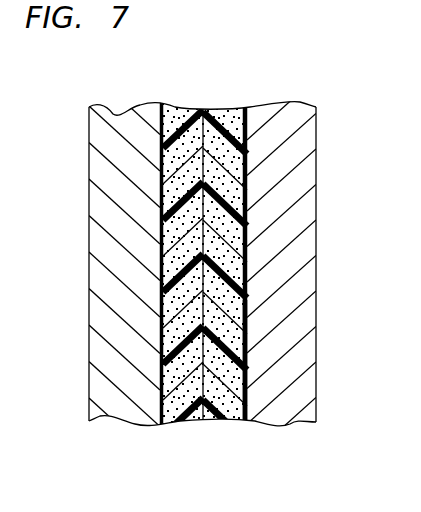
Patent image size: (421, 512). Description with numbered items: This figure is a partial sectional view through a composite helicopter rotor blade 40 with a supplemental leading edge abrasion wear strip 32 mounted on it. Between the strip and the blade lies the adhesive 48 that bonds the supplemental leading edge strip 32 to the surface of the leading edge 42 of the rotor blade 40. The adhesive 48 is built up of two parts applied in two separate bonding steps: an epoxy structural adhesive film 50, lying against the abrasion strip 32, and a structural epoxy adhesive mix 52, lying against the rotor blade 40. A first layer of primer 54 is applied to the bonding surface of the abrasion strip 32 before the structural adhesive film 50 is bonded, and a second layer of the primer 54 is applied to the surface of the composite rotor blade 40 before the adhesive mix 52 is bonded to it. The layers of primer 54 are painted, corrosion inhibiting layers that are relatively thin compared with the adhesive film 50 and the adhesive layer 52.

The supplemental leading edge abrasion wear strip 32 is at (100, 135).
The composite rotor blade 40 is at (298, 111).
The epoxy structural adhesive film 50 is at (183, 112).
The structural epoxy adhesive mix 52 is at (228, 117).
The primer 54 is at (159, 147).
The leading edge 42 is at (248, 372).
The adhesive 48 is at (201, 430).